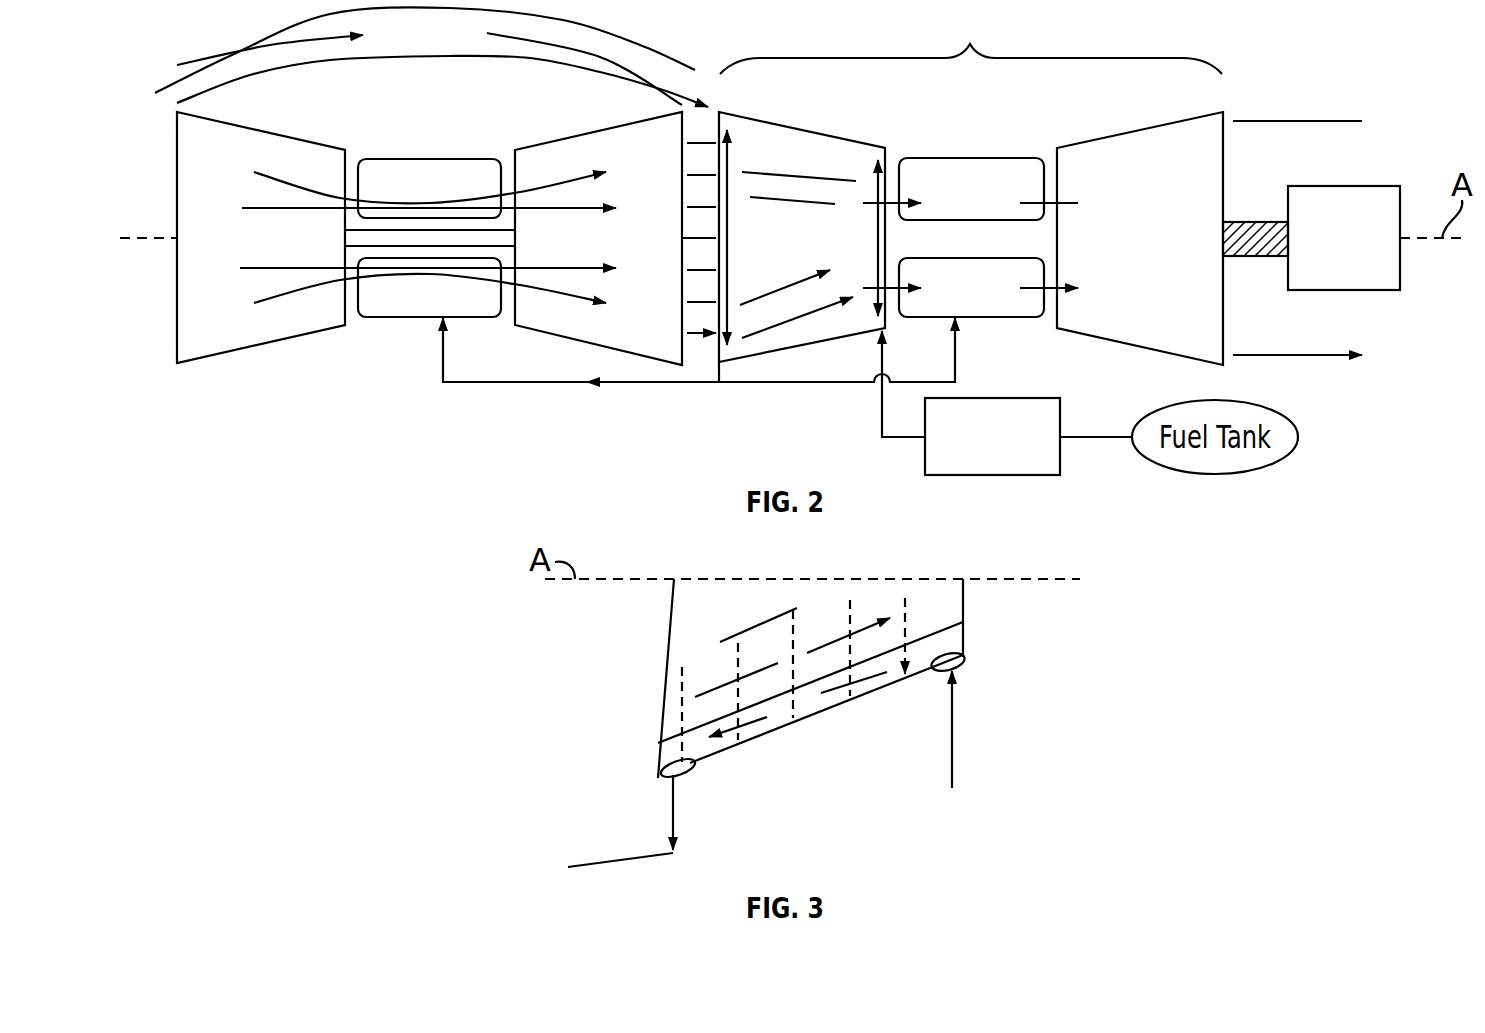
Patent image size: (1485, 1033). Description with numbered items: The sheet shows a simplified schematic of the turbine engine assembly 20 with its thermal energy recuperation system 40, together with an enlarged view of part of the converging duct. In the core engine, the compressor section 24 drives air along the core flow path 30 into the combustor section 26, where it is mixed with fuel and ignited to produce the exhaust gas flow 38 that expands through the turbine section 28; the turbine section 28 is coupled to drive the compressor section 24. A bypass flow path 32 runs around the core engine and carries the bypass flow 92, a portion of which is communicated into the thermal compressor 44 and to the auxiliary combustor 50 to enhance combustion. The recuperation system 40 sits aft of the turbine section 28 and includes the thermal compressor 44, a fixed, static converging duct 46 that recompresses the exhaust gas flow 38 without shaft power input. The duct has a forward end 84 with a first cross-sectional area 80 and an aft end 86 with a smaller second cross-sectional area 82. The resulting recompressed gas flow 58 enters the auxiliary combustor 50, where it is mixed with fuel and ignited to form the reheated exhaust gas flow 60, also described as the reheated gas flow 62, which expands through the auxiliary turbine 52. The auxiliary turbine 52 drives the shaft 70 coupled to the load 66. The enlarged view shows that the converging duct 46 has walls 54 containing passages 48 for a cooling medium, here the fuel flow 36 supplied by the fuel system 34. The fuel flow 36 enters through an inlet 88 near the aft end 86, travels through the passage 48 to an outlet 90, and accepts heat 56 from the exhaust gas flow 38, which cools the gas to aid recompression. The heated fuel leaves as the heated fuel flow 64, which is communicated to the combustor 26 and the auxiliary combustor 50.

In FIG. 2, the turbine engine assembly 20 is at (172, 48).
In FIG. 2, the compressor section 24 is at (258, 345).
In FIG. 2, the combustor section 26 is at (402, 158).
In FIG. 2, the turbine section 28 is at (557, 138).
In FIG. 2, the core flow path 30 is at (253, 270).
In FIG. 2, the bypass flow path 32 is at (446, 30).
In FIG. 2, the fuel system 34 is at (1010, 398).
In FIG. 3, the fuel flow 36 is at (952, 749).
In FIG. 3, the exhaust gas flow 38 is at (760, 627).
In FIG. 2, the recuperation system 40 is at (971, 42).
In FIG. 2, the thermal compressor 44 is at (805, 125).
In FIG. 3, the thermal compressor 44 is at (617, 679).
In FIG. 2, the converging duct 46 is at (868, 135).
In FIG. 3, the passages 48 is at (885, 676).
In FIG. 2, the auxiliary combustor 50 is at (985, 158).
In FIG. 2, the auxiliary turbine 52 is at (1130, 132).
In FIG. 3, the walls 54 is at (710, 761).
In FIG. 3, the heat 56 is at (907, 598).
In FIG. 2, the recompressed gas flow 58 is at (890, 200).
In FIG. 2, the reheated exhaust gas flow 60 is at (1050, 205).
In FIG. 2, the reheated gas flow 62 is at (1298, 121).
In FIG. 2, the heated fuel flow 64 is at (625, 384).
In FIG. 3, the heated fuel flow 64 is at (590, 862).
In FIG. 2, the load 66 is at (1356, 186).
In FIG. 2, the shaft 70 is at (1252, 222).
In FIG. 2, the first cross-sectional area 80 is at (735, 140).
In FIG. 2, the second cross-sectional area 82 is at (872, 300).
In FIG. 2, the forward end 84 is at (713, 368).
In FIG. 2, the aft end 86 is at (892, 309).
In FIG. 3, the inlet 88 is at (968, 668).
In FIG. 3, the outlet 90 is at (657, 783).
In FIG. 2, the bypass flow 92 is at (700, 92).